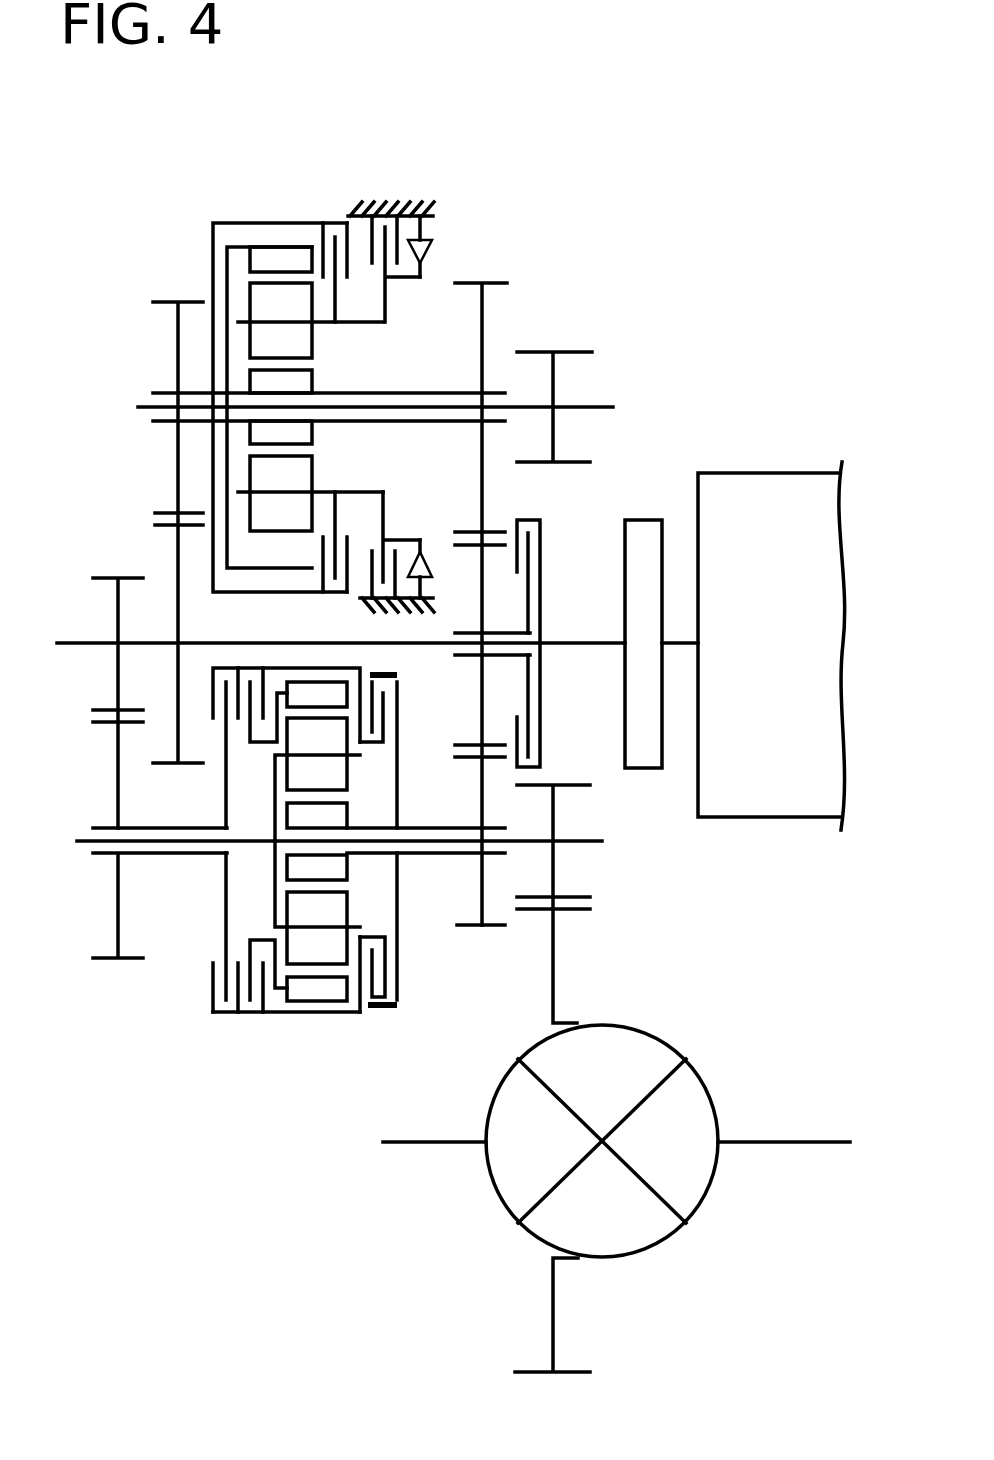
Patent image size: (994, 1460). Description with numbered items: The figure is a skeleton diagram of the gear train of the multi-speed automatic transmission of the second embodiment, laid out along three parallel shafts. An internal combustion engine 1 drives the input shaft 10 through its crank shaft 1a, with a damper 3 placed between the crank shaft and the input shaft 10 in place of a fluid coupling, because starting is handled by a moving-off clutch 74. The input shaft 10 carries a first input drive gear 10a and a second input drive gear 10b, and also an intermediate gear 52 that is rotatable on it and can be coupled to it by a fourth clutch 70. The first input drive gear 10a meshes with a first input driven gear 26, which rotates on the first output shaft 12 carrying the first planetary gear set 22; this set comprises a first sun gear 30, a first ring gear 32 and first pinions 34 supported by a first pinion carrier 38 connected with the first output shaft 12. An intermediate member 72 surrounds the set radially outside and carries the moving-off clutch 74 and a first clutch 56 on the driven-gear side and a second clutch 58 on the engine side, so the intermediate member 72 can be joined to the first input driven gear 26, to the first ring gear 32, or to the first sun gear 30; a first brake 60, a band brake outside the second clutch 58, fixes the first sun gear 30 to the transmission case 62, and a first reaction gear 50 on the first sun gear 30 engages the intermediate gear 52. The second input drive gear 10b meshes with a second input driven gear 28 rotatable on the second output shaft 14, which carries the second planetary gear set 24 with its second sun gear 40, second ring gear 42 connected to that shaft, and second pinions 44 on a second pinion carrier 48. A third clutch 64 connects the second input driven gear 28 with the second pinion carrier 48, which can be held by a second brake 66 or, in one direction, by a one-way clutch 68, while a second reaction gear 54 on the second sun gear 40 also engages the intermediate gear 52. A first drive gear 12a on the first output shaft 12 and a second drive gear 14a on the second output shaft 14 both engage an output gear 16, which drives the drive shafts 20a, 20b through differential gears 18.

The internal combustion engine 1 is at (765, 485).
The crank shaft 1a is at (687, 643).
The damper 3 is at (652, 770).
The input shaft 10 is at (578, 640).
The first input drive gear 10a is at (112, 578).
The second input drive gear 10b is at (158, 525).
The first output shaft 12 is at (585, 843).
The first drive gear 12a is at (588, 898).
The second output shaft 14 is at (585, 407).
The second drive gear 14a is at (565, 352).
The output gear 16 is at (585, 910).
The differential gears 18 is at (687, 1088).
The drive shaft 20a is at (430, 1143).
The drive shaft 20b is at (778, 1143).
The first planetary gear set 22 is at (318, 897).
The second planetary gear set 24 is at (291, 356).
The first input driven gear 26 is at (107, 962).
The second input driven gear 28 is at (178, 302).
The first sun gear 30 is at (323, 813).
The first ring gear 32 is at (312, 990).
The first pinions 34 is at (325, 734).
The first pinion carrier 38 is at (332, 757).
The second sun gear 40 is at (305, 440).
The second ring gear 42 is at (262, 248).
The second pinions 44 is at (305, 345).
The second pinion carrier 48 is at (322, 323).
The first reaction gear 50 is at (467, 925).
The intermediate gear 52 is at (458, 543).
The second reaction gear 54 is at (465, 283).
The first clutch 56 is at (246, 992).
The second clutch 58 is at (390, 973).
The first brake 60 is at (397, 1006).
The transmission case 62 is at (410, 214).
The third clutch 64 is at (327, 222).
The second brake 66 is at (389, 250).
The one-way clutch 68 is at (425, 245).
The fourth clutch 70 is at (547, 500).
The intermediate member 72 is at (345, 1013).
The moving-off clutch 74 is at (220, 980).